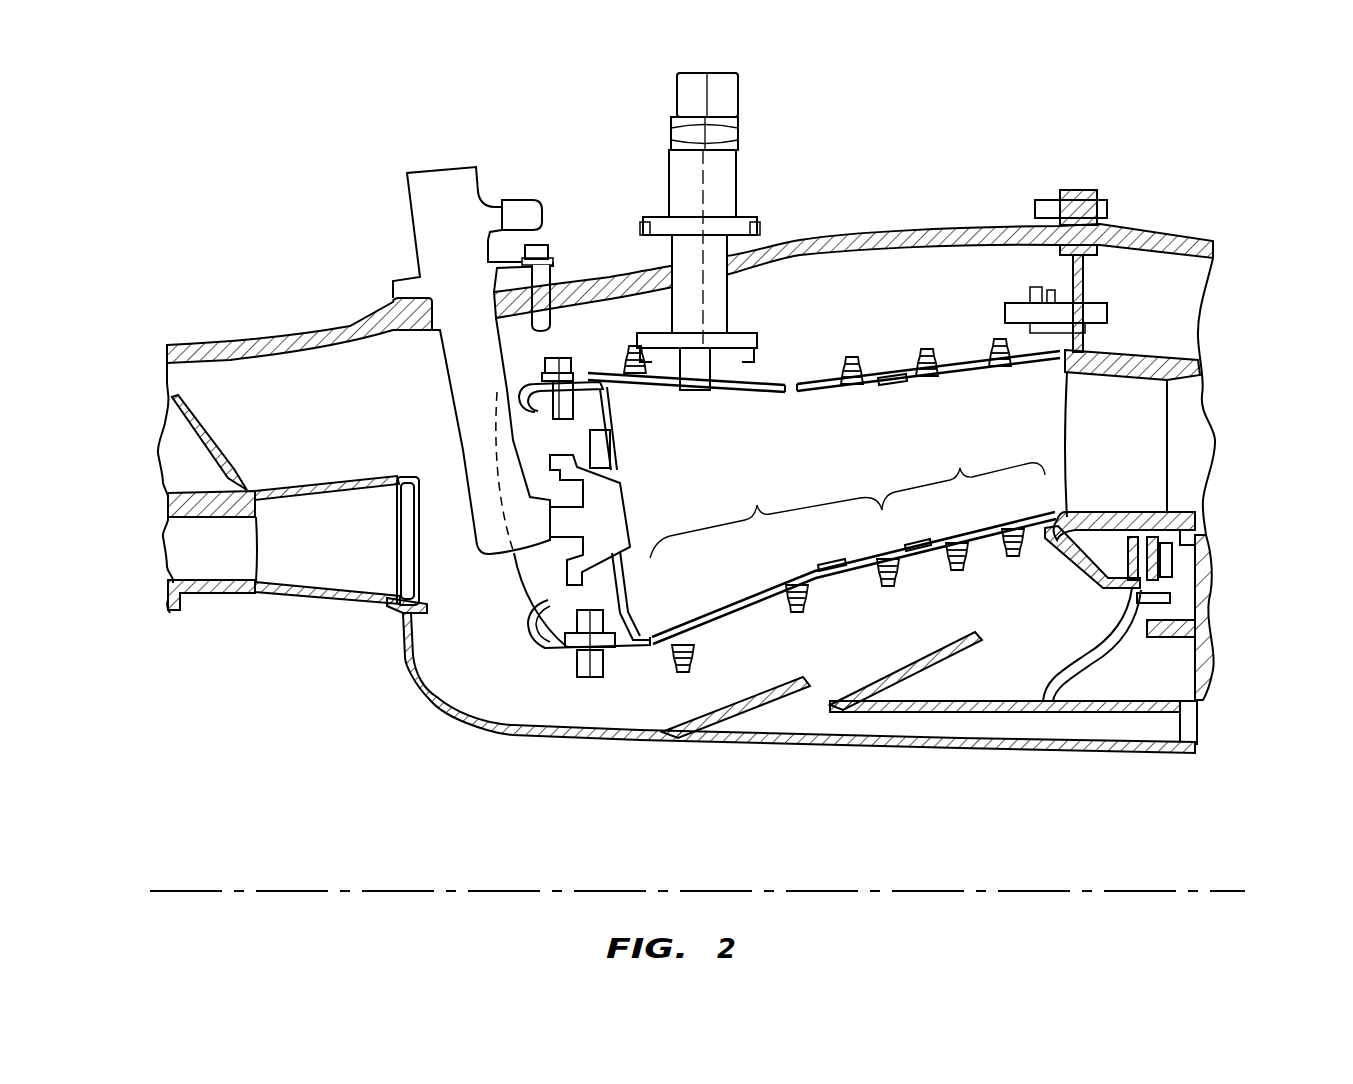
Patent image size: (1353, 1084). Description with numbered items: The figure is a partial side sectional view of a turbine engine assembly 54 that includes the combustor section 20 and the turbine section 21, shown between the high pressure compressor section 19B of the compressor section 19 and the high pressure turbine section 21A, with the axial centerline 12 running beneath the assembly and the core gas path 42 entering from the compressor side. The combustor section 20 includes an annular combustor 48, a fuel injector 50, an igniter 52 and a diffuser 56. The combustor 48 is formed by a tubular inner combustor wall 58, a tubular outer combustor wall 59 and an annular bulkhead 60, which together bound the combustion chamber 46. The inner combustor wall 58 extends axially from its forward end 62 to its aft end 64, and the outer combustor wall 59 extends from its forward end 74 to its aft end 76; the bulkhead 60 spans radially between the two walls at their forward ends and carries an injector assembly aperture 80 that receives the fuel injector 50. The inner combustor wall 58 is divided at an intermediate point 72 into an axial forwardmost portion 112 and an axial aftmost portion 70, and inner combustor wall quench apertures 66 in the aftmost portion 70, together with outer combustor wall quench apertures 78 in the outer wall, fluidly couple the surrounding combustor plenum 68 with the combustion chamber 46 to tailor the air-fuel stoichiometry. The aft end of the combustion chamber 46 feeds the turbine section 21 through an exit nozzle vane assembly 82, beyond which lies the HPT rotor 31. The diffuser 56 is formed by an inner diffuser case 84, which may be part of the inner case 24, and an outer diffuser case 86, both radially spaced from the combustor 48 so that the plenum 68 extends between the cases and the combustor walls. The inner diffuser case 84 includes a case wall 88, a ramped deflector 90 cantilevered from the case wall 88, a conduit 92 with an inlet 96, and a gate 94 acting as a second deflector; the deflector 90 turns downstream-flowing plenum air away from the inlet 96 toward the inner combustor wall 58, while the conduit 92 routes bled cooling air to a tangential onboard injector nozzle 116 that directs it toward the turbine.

The axial centerline 12 is at (1240, 889).
The compressor section 19 is at (295, 405).
The high pressure compressor section 19B is at (192, 300).
The combustor section 20 is at (772, 128).
The turbine section 21 is at (1210, 299).
The high pressure turbine section 21A is at (1172, 157).
The inner case 24 is at (853, 227).
The outer diffuser case 86 is at (817, 232).
The HPT rotor 31 is at (1233, 638).
The core gas path 42 is at (207, 545).
The combustion chamber 46 is at (828, 458).
The combustor 48 is at (816, 345).
The fuel injector 50 is at (450, 410).
The igniter 52 is at (668, 163).
The turbine engine assembly 54 is at (145, 127).
The diffuser 56 is at (394, 698).
The inner combustor wall 58 is at (768, 574).
The outer combustor wall 59 is at (757, 397).
The bulkhead 60 is at (617, 437).
The forward end of inner combustor wall 62 is at (652, 650).
The aft end of inner combustor wall 64 is at (1043, 552).
The inner combustor wall quench apertures 66 is at (920, 545).
The combustor plenum 68 is at (893, 326).
The axial aftmost portion of inner combustor wall 70 is at (963, 472).
The intermediate point 72 is at (886, 551).
The forward end of outer combustor wall 74 is at (592, 378).
The aft end of outer combustor wall 76 is at (1073, 347).
The outer combustor wall quench apertures 78 is at (892, 376).
The injector assembly aperture 80 is at (617, 467).
The exit nozzle vane assembly 82 is at (1172, 418).
The inner diffuser case 84 is at (501, 741).
The case wall 88 is at (613, 752).
The deflector 90 is at (750, 742).
The conduit 92 is at (905, 758).
The gate 94 is at (905, 665).
The inlet 96 is at (818, 695).
The axial forwardmost portion of inner combustor wall 112 is at (766, 520).
The tangential onboard injector nozzle 116 is at (1120, 765).